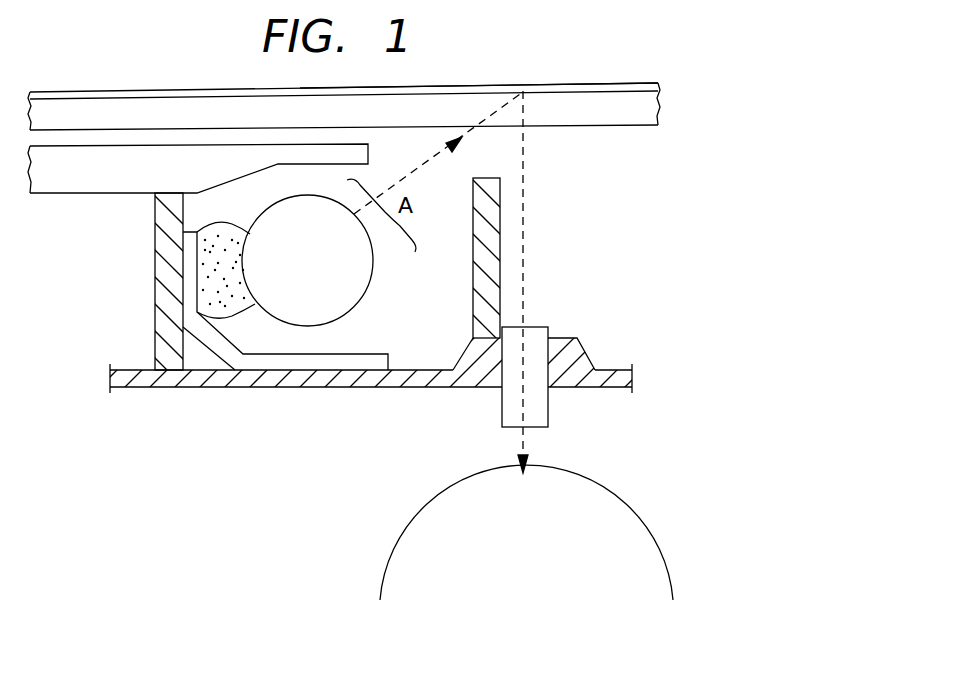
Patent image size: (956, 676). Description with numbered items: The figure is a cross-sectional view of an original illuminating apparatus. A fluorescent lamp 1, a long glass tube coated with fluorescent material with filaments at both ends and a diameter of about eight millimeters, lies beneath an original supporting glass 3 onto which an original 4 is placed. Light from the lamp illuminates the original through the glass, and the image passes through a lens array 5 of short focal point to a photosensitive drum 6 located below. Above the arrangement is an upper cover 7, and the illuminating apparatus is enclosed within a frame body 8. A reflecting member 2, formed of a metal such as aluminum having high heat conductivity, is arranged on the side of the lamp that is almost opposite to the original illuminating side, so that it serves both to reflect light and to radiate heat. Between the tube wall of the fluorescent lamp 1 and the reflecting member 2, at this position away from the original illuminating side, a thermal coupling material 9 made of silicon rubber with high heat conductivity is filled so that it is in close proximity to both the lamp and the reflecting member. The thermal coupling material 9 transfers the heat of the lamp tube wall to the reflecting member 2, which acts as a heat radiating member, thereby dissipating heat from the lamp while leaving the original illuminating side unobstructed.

The fluorescent lamp 1 is at (355, 277).
The reflecting member 2 is at (287, 363).
The original supporting glass 3 is at (580, 112).
The original 4 is at (618, 83).
The lens array 5 is at (540, 333).
The photosensitive drum 6 is at (622, 502).
The upper cover 7 is at (85, 178).
The frame body 8 is at (125, 372).
The thermal coupling material 9 is at (218, 307).